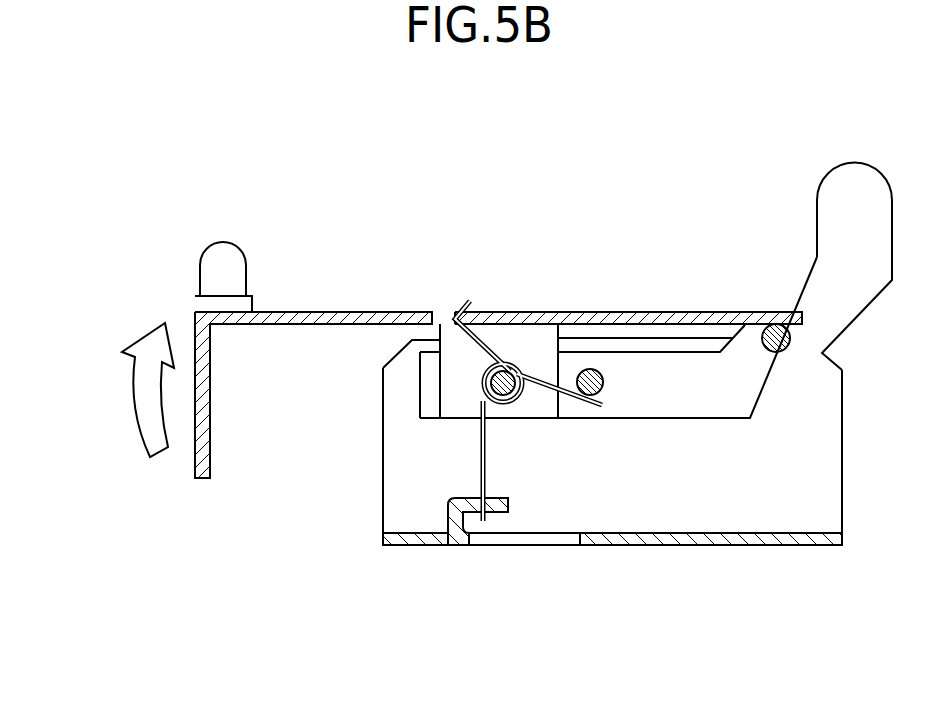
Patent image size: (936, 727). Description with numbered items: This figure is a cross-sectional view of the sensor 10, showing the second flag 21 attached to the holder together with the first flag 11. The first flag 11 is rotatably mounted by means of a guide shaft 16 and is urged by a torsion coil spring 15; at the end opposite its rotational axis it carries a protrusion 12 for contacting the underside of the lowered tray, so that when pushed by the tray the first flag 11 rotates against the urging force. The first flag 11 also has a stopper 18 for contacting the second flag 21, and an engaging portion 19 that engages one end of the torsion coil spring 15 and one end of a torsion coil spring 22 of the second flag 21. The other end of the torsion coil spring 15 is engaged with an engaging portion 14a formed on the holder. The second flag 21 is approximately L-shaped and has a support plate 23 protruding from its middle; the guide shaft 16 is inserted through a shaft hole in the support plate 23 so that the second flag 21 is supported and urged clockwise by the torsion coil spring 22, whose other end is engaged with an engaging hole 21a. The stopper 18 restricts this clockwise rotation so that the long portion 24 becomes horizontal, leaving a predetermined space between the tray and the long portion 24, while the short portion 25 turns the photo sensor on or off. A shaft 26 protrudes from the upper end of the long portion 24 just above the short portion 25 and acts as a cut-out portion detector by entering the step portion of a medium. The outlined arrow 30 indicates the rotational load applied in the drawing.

The sensor 10 is at (368, 597).
The first flag 11 is at (853, 292).
The protrusion 12 is at (850, 163).
The engaging portion 14a is at (499, 515).
The torsion coil spring 15 is at (486, 460).
The guide shaft 16 is at (515, 401).
The stopper 18 is at (777, 353).
The engaging portion 19 is at (598, 384).
The second flag 21 is at (578, 310).
The engaging hole 21a is at (441, 312).
The torsion coil spring 22 is at (490, 345).
The support plate 23 is at (455, 362).
The long portion 24 is at (329, 312).
The short portion 25 is at (211, 452).
The shaft 26 is at (222, 242).
The rotational load 30 is at (135, 433).